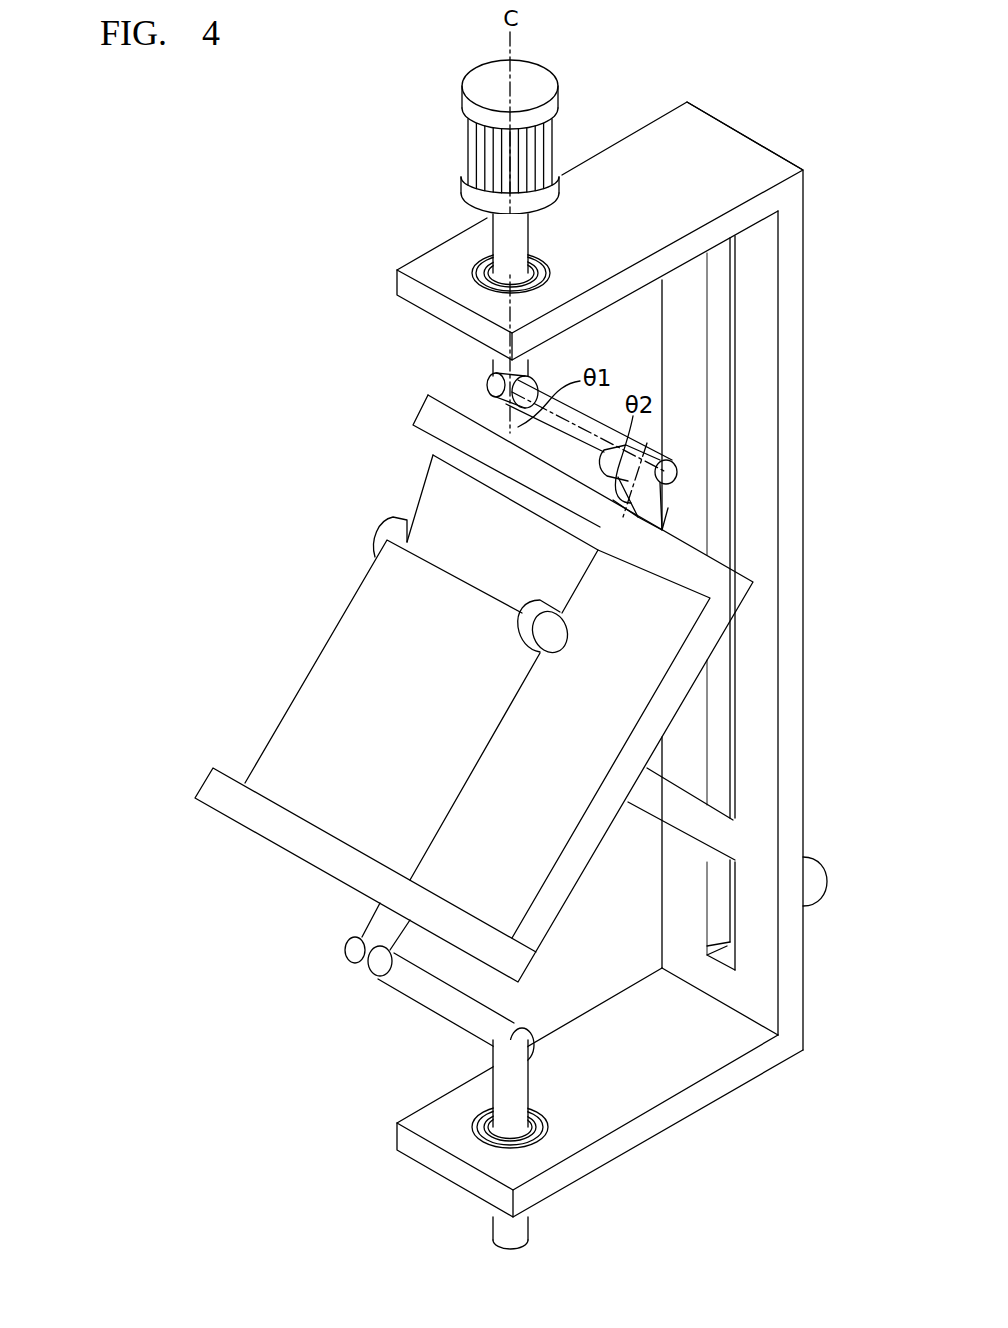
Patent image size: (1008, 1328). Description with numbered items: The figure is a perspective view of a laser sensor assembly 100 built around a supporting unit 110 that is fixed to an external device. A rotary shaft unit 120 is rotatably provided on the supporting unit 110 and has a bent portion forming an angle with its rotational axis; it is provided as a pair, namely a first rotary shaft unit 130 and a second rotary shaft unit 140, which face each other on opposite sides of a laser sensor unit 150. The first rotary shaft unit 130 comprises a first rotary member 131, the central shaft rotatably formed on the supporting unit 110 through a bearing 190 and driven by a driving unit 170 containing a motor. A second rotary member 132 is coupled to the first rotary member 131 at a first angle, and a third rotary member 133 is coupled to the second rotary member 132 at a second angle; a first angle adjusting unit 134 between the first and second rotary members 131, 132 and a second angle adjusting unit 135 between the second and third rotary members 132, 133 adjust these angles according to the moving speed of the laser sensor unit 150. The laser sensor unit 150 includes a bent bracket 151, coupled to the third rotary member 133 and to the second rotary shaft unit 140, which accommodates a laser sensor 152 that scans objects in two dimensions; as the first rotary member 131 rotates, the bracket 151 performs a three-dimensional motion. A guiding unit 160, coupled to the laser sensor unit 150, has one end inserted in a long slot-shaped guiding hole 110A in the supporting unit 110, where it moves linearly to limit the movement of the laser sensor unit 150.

The laser sensor assembly 100 is at (270, 137).
The supporting unit 110 is at (707, 163).
The guiding hole 110A is at (718, 344).
The rotary shaft unit 120 is at (80, 543).
The first rotary shaft unit 130 is at (138, 437).
The first rotary member 131 is at (500, 365).
The second rotary member 132 is at (603, 458).
The third rotary member 133 is at (640, 515).
The first angle adjusting unit 134 is at (514, 402).
The second angle adjusting unit 135 is at (655, 472).
The second rotary shaft unit 140 is at (508, 1087).
The laser sensor unit 150 is at (863, 933).
The bracket 151 is at (548, 898).
The laser sensor 152 is at (420, 788).
The guiding unit 160 is at (687, 810).
The driving unit 170 is at (473, 172).
The bearing 190 is at (485, 277).